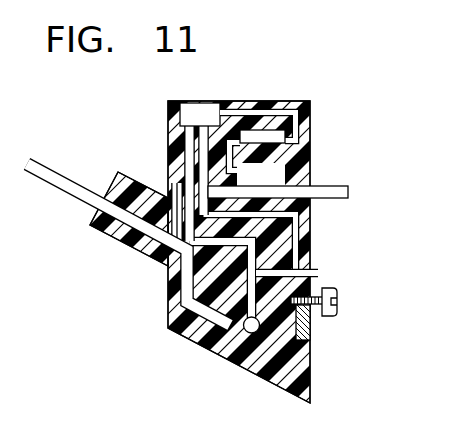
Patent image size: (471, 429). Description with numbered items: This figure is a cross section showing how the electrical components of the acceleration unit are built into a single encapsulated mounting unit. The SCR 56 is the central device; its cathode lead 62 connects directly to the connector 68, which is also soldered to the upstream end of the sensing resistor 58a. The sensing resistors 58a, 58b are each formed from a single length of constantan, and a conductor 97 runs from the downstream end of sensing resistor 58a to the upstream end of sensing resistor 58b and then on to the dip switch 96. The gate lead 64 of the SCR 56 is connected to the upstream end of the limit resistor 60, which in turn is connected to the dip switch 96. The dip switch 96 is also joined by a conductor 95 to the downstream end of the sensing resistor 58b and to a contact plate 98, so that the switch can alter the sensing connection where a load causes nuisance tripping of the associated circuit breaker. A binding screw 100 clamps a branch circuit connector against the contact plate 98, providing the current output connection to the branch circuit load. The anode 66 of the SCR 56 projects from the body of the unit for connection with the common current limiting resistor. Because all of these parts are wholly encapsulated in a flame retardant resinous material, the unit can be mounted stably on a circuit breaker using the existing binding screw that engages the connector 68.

The SCR 56 is at (292, 172).
The sensing resistor 58a is at (148, 258).
The sensing resistor 58b is at (318, 277).
The limit resistor 60 is at (274, 118).
The cathode lead 62 is at (170, 157).
The gate lead 64 is at (245, 148).
The anode 66 is at (348, 190).
The connector 68 is at (36, 176).
The conductor 95 is at (310, 246).
The dip switch 96 is at (204, 102).
The conductor 97 is at (243, 318).
The contact plate 98 is at (312, 322).
The binding screw 100 is at (333, 317).